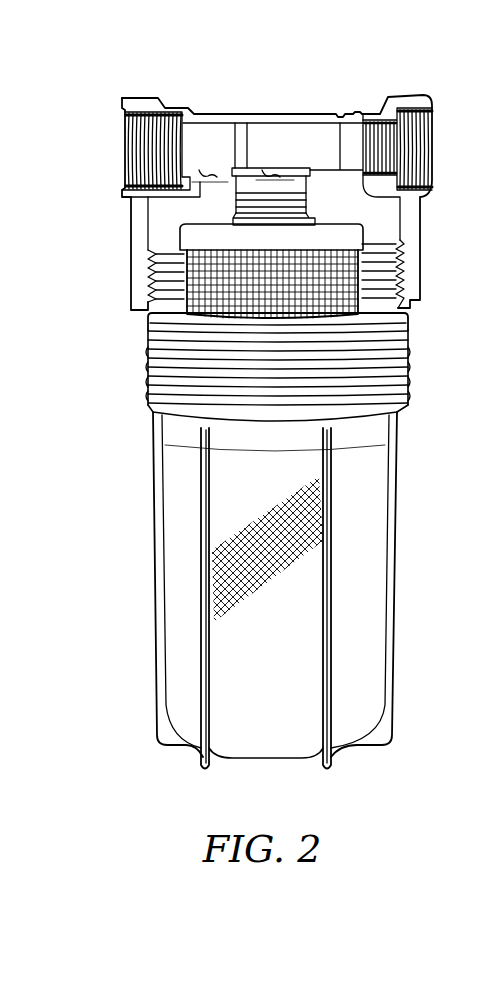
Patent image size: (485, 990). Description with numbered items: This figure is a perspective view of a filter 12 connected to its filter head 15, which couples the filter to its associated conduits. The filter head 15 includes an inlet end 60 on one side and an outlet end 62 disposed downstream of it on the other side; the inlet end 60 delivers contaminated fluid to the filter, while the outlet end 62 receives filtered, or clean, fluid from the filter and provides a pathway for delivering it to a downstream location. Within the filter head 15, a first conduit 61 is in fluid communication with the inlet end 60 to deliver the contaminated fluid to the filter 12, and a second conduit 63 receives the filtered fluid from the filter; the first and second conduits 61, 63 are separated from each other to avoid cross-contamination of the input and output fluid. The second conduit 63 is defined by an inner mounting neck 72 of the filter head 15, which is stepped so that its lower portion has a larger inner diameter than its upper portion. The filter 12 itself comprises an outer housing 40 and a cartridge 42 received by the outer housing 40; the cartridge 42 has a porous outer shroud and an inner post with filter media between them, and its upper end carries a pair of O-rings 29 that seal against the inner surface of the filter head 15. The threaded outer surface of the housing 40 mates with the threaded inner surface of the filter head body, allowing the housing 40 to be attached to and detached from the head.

The filter 12 is at (253, 677).
The filter head 15 is at (127, 150).
The O-ring 29 is at (236, 196).
The outer housing 40 is at (178, 554).
The cartridge 42 is at (192, 292).
The inlet end 60 is at (181, 84).
The first conduit 61 is at (211, 168).
The outlet end 62 is at (396, 64).
The second conduit 63 is at (268, 170).
The mounting neck 72 is at (264, 223).